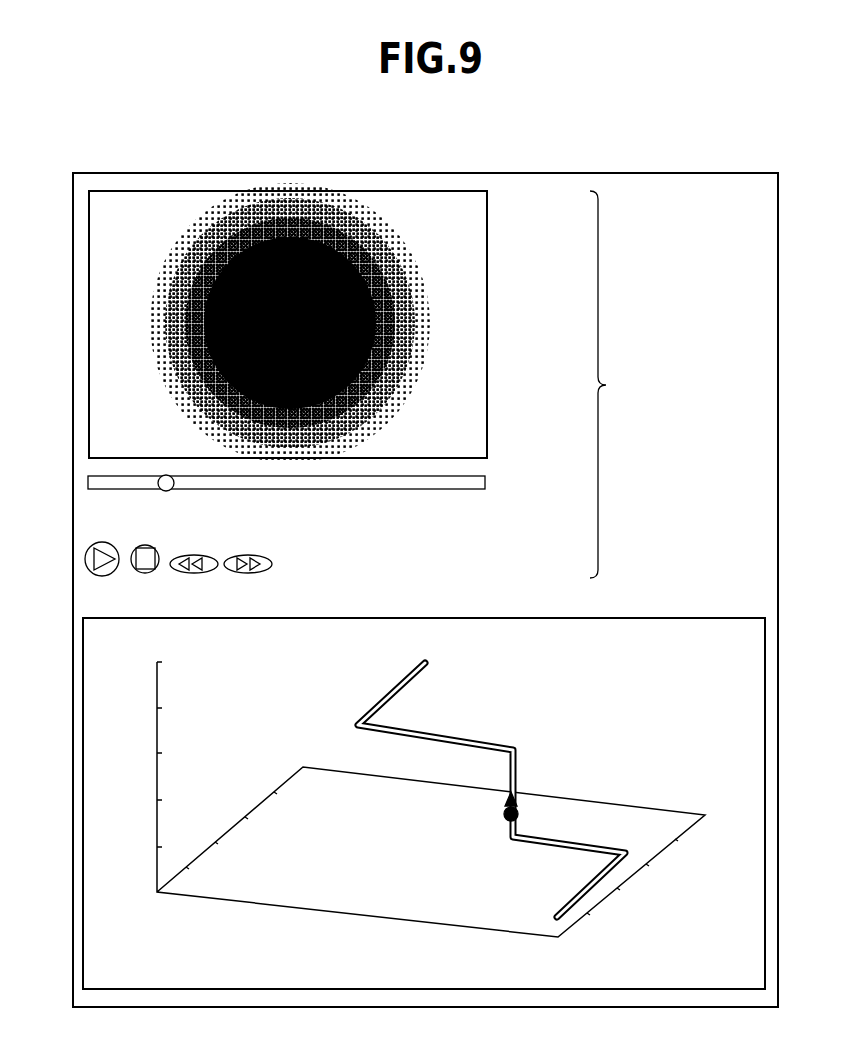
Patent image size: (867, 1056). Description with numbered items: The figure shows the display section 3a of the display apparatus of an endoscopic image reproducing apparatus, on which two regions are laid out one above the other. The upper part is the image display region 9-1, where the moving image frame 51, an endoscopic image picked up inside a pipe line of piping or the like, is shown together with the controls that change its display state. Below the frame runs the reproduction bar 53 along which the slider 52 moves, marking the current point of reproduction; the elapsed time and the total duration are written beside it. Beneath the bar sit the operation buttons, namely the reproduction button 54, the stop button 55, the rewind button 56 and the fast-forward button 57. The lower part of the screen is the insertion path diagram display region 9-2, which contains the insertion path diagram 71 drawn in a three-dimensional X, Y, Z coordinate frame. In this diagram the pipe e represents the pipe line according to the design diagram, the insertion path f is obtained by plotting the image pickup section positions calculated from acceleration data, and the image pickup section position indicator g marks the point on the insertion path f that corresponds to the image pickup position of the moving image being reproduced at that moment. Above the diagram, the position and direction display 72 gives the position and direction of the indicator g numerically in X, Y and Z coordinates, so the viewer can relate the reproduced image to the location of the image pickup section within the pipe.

The display section 3a is at (518, 173).
The moving image frame 51 is at (90, 280).
The slider 52 is at (162, 476).
The reproduction bar 53 is at (88, 483).
The reproduction button 54 is at (85, 559).
The stop button 55 is at (143, 546).
The rewind button 56 is at (180, 574).
The fast-forward button 57 is at (240, 575).
The image display region 9-1 is at (342, 408).
The insertion path diagram display region 9-2 is at (765, 696).
The insertion path diagram 71 is at (97, 877).
The position and direction display 72 is at (733, 625).
The pipe e is at (518, 761).
The insertion path f is at (458, 736).
The image pickup section position indicator g is at (516, 812).